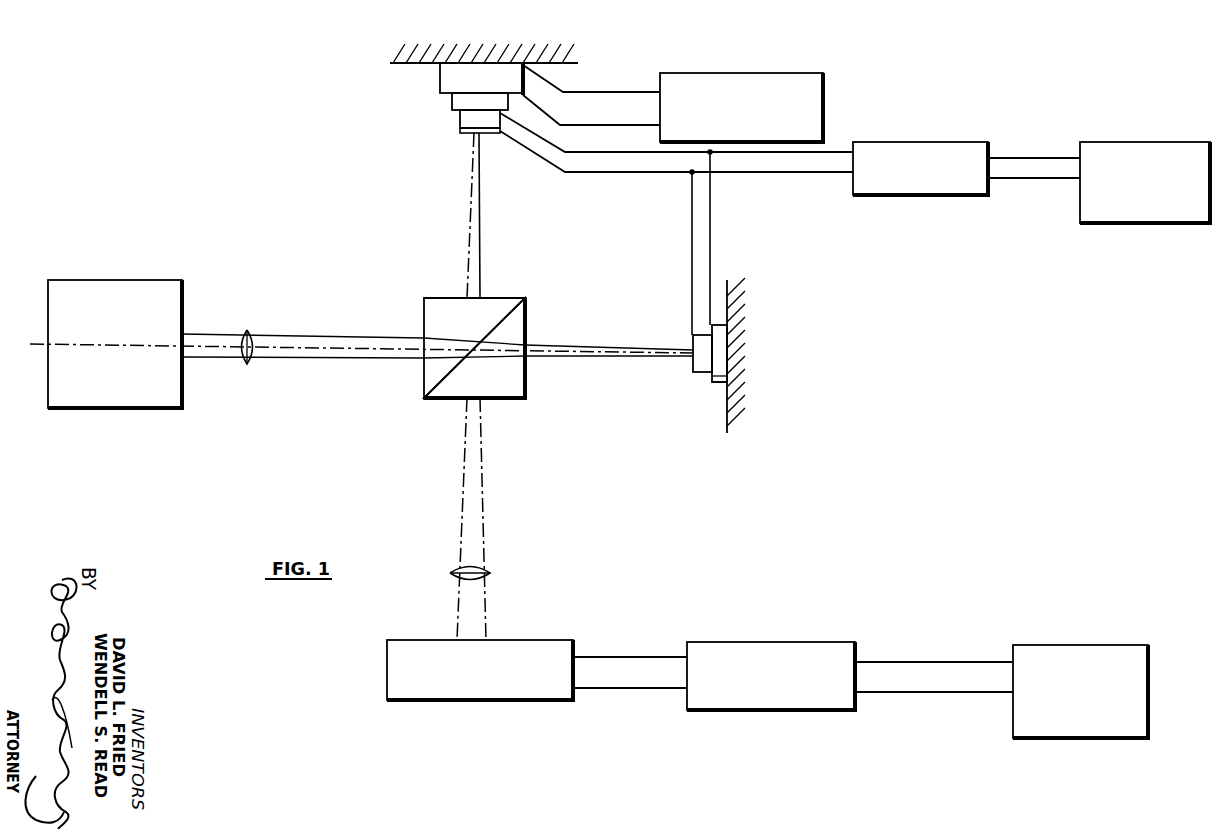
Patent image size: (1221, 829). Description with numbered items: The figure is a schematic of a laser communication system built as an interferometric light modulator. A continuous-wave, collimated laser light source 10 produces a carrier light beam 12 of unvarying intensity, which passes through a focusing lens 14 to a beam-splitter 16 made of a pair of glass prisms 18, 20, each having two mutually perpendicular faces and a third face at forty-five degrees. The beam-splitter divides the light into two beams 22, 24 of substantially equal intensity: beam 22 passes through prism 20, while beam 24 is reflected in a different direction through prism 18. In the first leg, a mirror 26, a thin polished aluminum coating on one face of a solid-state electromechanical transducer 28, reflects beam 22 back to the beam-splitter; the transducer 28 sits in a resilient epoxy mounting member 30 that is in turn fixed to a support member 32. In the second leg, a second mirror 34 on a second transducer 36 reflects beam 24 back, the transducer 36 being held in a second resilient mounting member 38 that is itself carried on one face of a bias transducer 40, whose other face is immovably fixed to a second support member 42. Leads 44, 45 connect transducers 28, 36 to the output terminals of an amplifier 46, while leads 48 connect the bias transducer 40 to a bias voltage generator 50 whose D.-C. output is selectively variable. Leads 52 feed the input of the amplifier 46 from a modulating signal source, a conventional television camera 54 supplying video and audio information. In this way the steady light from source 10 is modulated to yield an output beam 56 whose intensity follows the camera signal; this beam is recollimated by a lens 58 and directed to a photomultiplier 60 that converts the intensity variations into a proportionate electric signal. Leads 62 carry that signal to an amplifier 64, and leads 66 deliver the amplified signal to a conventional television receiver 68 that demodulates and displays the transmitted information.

The laser light source 10 is at (118, 290).
The carrier light beam 12 is at (198, 333).
The focusing lens 14 is at (248, 331).
The beam-splitter 16 is at (403, 333).
The glass prism 18 is at (430, 372).
The glass prism 20 is at (493, 349).
The light beam 22 is at (574, 347).
The light beam 24 is at (478, 252).
The mirror 26 is at (693, 343).
The solid-state electromechanical transducer 28 is at (712, 333).
The resilient mounting member 30 is at (722, 383).
The support member 32 is at (727, 413).
The second mirror 34 is at (462, 133).
The second solid-state electromechanical transducer 36 is at (460, 117).
The second resilient mounting member 38 is at (453, 100).
The bias transducer 40 is at (452, 81).
The second support member 42 is at (548, 66).
The leads 44 is at (708, 205).
The leads 45 is at (780, 157).
The amplifier 46 is at (943, 180).
The leads 48 is at (628, 125).
The bias voltage generator 50 is at (800, 110).
The leads 52 is at (1052, 153).
The television camera 54 is at (1146, 200).
The output beam 56 is at (484, 486).
The lens 58 is at (480, 572).
The photomultiplier 60 is at (437, 687).
The leads 62 is at (611, 688).
The amplifier 64 is at (796, 708).
The leads 66 is at (948, 662).
The television receiver 68 is at (1093, 707).